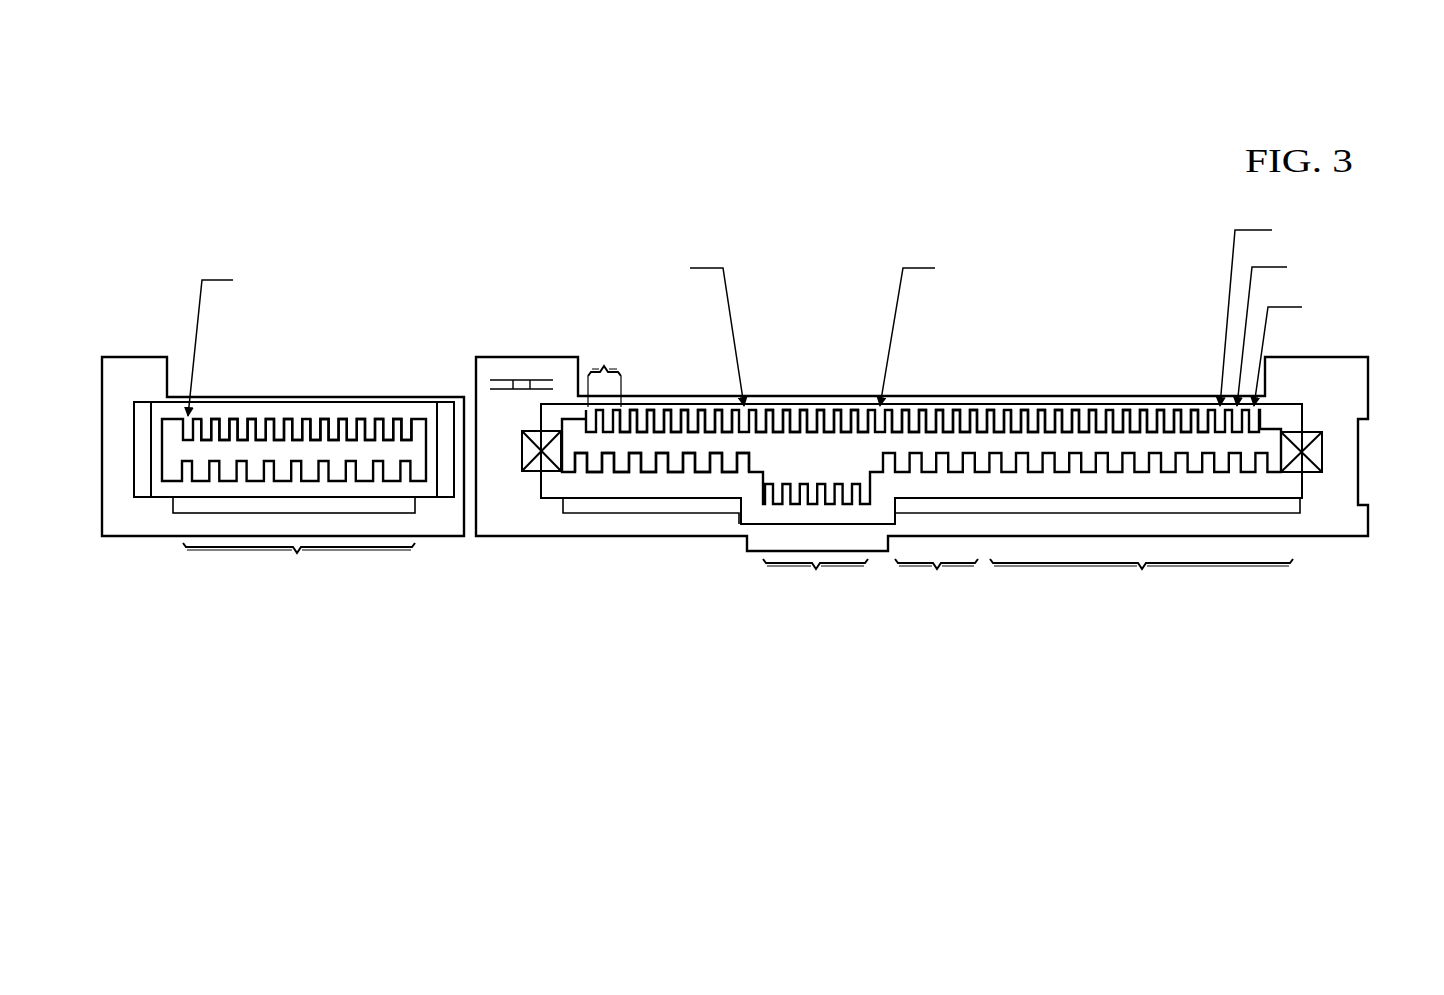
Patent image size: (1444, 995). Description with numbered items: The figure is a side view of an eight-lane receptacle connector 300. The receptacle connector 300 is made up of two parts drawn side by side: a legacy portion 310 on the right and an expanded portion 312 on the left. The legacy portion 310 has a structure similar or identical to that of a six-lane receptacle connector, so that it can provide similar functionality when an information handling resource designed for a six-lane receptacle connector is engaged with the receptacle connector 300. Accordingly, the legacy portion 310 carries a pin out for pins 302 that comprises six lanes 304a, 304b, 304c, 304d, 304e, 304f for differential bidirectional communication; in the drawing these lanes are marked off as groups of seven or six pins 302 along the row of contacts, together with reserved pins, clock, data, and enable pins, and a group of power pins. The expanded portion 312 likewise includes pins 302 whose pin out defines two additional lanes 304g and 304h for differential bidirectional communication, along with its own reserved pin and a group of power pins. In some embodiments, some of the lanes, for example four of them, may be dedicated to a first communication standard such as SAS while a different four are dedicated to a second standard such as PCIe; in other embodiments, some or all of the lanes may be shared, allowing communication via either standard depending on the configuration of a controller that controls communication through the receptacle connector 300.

The eight-lane receptacle connector 300 is at (464, 155).
The pins 302 is at (1264, 452).
The lane 304a is at (573, 559).
The lane 304b is at (756, 391).
The lane 304c is at (622, 391).
The lane 304d is at (1004, 391).
The lane 304e is at (1106, 391).
The lane 304f is at (1208, 391).
The lane 304g is at (296, 391).
The lane 304h is at (412, 391).
The legacy portion 310 is at (1362, 205).
The expanded portion 312 is at (102, 250).